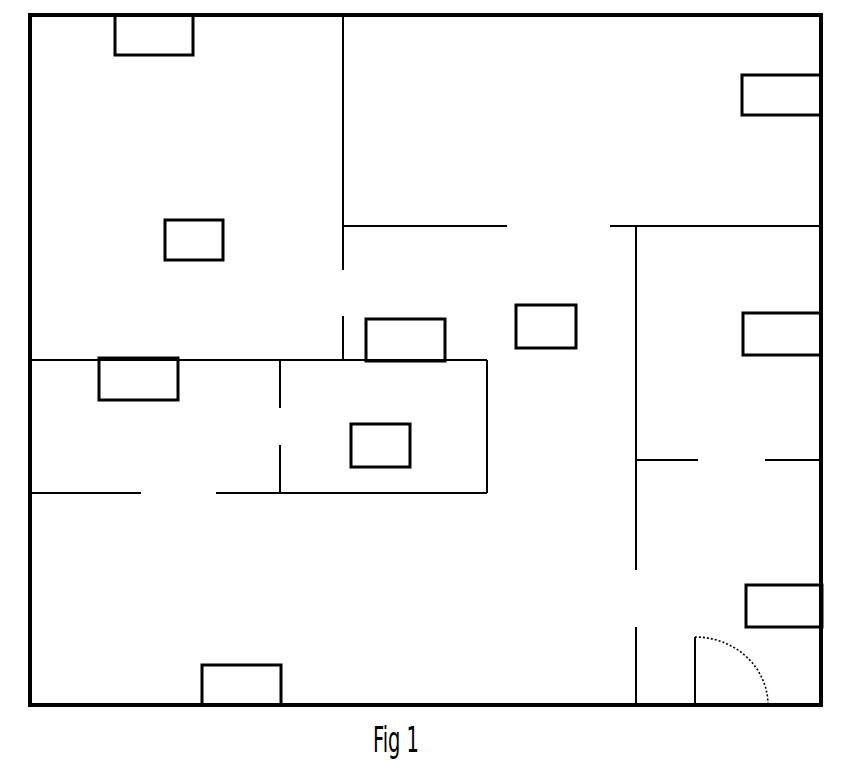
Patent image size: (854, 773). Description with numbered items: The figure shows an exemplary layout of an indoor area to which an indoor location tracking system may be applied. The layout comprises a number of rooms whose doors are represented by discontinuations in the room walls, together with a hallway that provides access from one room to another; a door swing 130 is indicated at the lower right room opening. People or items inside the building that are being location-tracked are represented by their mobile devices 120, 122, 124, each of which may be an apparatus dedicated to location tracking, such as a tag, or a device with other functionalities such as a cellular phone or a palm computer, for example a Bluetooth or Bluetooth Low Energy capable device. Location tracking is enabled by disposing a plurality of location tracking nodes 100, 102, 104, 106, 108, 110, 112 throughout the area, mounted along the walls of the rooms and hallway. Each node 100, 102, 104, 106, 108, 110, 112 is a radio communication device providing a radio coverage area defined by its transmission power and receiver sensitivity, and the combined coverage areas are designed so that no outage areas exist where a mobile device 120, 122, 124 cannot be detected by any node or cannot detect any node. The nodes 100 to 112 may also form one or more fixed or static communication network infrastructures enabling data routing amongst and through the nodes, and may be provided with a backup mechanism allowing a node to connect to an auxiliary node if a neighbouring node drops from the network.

The location tracking node 100 is at (178, 57).
The location tracking node 102 is at (405, 317).
The location tracking node 104 is at (777, 117).
The location tracking node 106 is at (153, 403).
The location tracking node 108 is at (768, 357).
The location tracking node 110 is at (246, 662).
The location tracking node 112 is at (773, 629).
The mobile device 120 is at (202, 218).
The mobile device 122 is at (390, 423).
The mobile device 124 is at (553, 304).
The door 130 is at (693, 637).